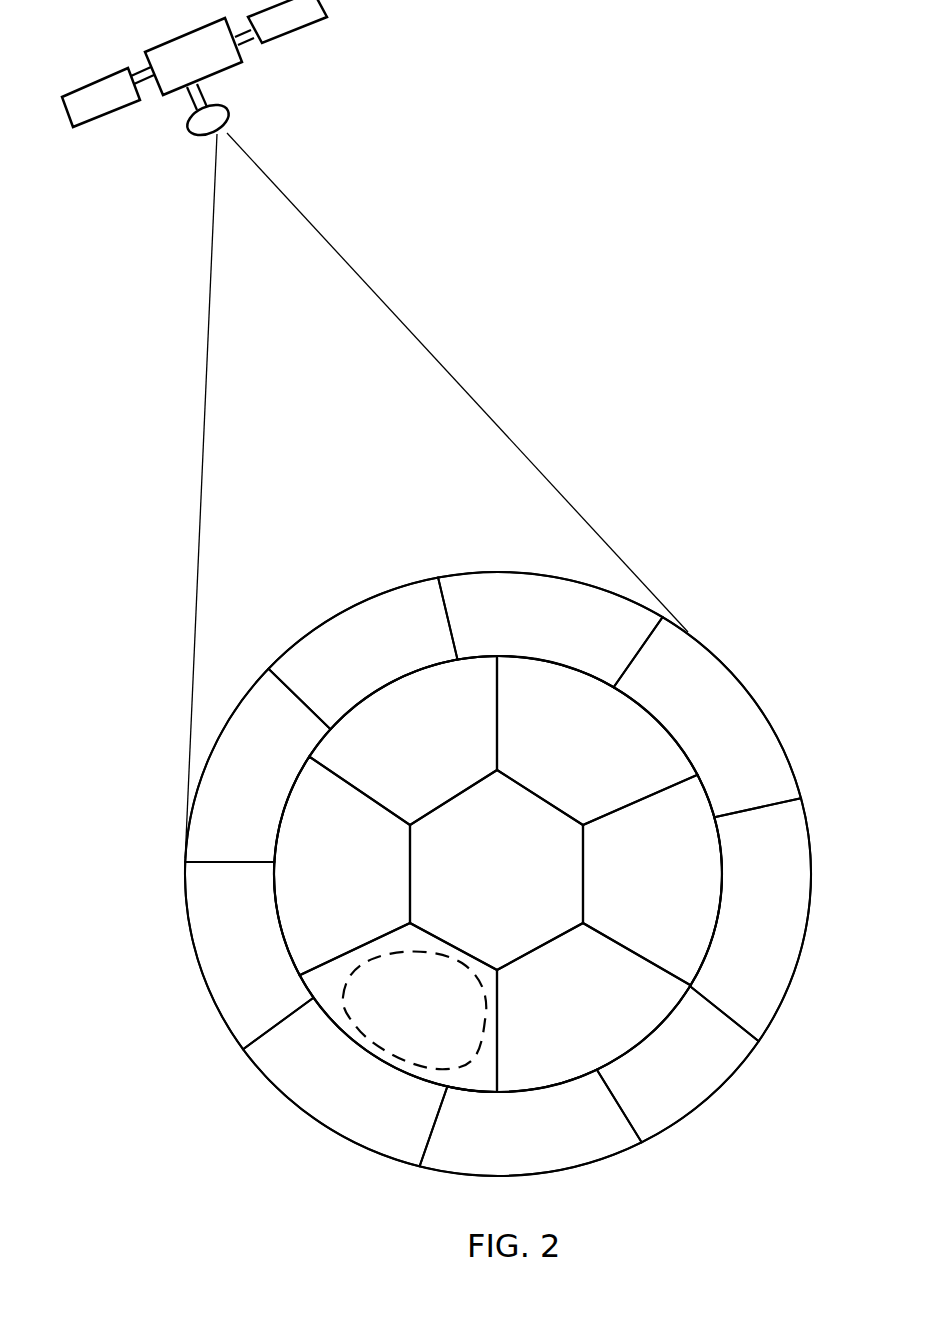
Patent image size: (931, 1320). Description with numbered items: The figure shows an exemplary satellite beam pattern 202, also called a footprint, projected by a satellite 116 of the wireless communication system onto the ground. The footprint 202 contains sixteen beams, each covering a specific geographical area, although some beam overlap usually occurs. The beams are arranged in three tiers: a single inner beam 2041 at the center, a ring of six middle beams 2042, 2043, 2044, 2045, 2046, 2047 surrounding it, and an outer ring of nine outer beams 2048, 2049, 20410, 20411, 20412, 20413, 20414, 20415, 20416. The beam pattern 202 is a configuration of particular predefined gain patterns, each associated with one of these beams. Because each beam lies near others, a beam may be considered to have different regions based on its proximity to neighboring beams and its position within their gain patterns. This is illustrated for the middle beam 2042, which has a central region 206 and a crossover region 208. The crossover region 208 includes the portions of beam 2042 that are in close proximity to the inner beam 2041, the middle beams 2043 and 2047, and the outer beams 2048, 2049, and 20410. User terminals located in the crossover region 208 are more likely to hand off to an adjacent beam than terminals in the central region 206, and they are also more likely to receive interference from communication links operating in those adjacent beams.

The satellite 116 is at (296, 32).
The satellite beam pattern 202 is at (742, 679).
The inner beam 2041 is at (496, 870).
The middle beam 2042 is at (398, 1007).
The middle beam 2043 is at (342, 866).
The middle beam 2044 is at (403, 740).
The middle beam 2045 is at (597, 740).
The middle beam 2046 is at (652, 880).
The middle beam 2047 is at (594, 1007).
The outer beam 2048 is at (531, 1123).
The outer beam 2049 is at (345, 1082).
The outer beam 20410 is at (249, 955).
The outer beam 20411 is at (257, 765).
The outer beam 20412 is at (363, 654).
The outer beam 20413 is at (550, 629).
The outer beam 20414 is at (707, 717).
The outer beam 20415 is at (750, 919).
The outer beam 20416 is at (678, 1064).
The central region 206 is at (443, 1053).
The crossover region 208 is at (478, 1078).